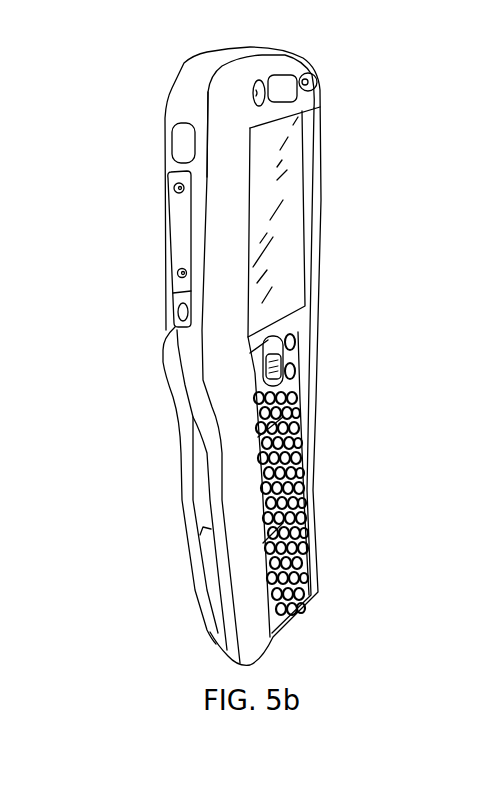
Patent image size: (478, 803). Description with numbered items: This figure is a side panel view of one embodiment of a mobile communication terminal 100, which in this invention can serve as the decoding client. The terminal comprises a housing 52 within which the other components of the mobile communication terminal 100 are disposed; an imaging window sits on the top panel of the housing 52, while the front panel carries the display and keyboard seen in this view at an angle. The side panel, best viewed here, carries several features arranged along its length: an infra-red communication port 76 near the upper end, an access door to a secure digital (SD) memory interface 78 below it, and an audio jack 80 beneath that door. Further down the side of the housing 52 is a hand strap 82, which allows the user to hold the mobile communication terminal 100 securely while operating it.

The mobile communication terminal 100 is at (325, 63).
The housing 52 is at (190, 64).
The infra-red communication port 76 is at (176, 137).
The access door to a secure digital (SD) memory interface 78 is at (177, 223).
The audio jack 80 is at (180, 310).
The hand strap 82 is at (183, 413).